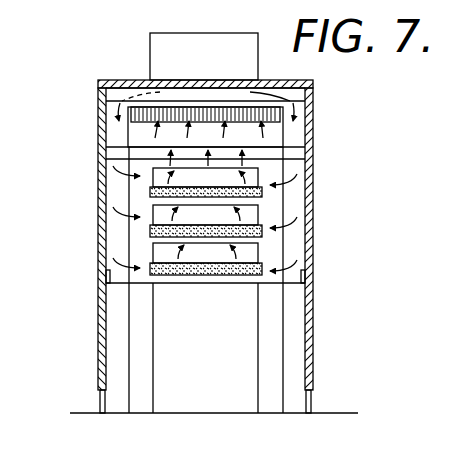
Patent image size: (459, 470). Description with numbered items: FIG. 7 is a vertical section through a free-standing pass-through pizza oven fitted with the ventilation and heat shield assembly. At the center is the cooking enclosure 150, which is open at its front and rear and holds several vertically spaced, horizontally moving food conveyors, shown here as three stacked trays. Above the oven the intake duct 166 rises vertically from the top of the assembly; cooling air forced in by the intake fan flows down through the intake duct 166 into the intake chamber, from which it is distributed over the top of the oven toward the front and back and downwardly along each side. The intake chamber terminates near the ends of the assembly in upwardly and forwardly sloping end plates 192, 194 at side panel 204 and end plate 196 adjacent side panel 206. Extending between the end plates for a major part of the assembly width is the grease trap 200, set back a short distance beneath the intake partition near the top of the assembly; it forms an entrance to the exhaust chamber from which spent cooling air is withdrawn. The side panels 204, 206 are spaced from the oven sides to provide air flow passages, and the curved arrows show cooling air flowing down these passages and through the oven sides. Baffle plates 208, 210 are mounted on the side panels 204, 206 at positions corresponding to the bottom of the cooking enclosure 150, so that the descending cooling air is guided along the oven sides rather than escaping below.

The intake duct 166 is at (150, 46).
The end plate 194 is at (112, 97).
The end plate 192 is at (112, 125).
The grease trap 200 is at (283, 112).
The end plate 196 is at (300, 135).
The side panel 204 is at (98, 202).
The side panel 206 is at (313, 199).
The baffle plate 208 is at (115, 283).
The baffle plate 210 is at (298, 297).
The cooking enclosure 150 is at (220, 285).